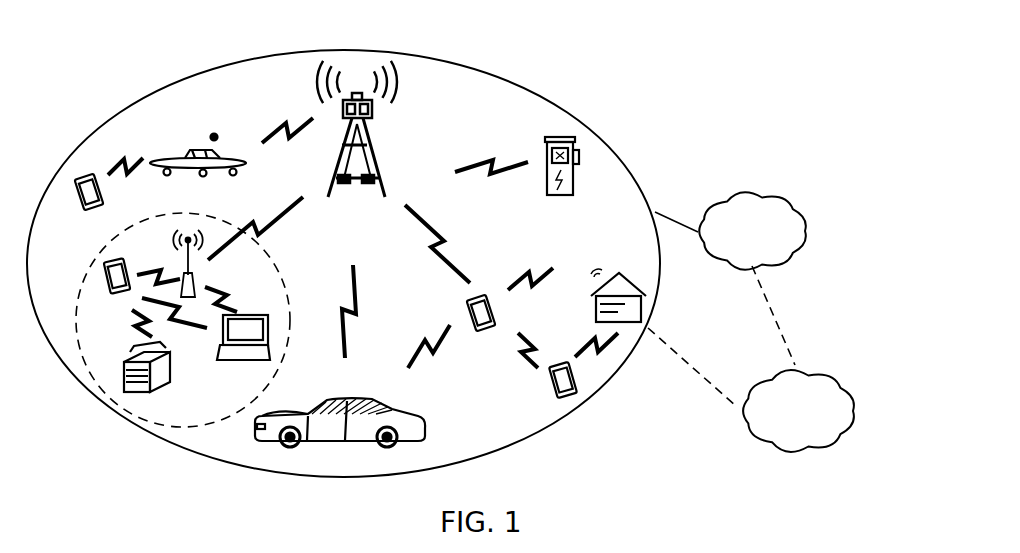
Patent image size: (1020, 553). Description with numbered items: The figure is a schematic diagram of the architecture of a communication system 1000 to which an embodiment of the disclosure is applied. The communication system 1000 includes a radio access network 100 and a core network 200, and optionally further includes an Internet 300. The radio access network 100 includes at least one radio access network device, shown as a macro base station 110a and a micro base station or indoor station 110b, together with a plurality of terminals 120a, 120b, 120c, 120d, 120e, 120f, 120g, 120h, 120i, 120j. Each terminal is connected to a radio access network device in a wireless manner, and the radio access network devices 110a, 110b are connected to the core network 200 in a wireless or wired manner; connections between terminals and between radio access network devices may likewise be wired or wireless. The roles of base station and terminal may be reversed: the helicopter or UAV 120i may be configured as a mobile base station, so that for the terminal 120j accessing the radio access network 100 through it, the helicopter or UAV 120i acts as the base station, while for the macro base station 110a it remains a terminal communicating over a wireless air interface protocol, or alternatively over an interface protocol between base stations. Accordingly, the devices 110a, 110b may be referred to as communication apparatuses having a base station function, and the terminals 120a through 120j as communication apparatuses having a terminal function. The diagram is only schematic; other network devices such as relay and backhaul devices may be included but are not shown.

The communication system 1000 is at (898, 50).
The radio access network 100 is at (352, 51).
The radio access network device (macro base station) 110a is at (368, 146).
The radio access network device (micro base station or indoor station) 110b is at (199, 275).
The terminal 120a is at (480, 295).
The terminal 120b is at (445, 418).
The terminal 120c is at (570, 196).
The terminal 120d is at (622, 276).
The terminal 120e is at (551, 394).
The terminal 120f is at (107, 290).
The terminal 120g is at (225, 361).
The terminal 120h is at (150, 392).
The helicopter or UAV terminal 120i is at (180, 157).
The terminal 120j is at (86, 211).
The core network 200 is at (760, 192).
The Internet 300 is at (853, 388).